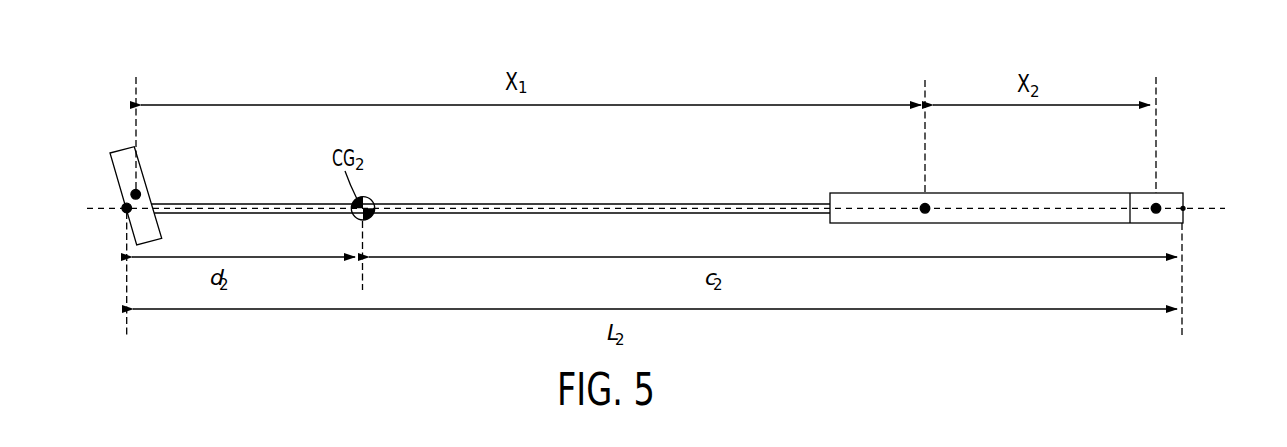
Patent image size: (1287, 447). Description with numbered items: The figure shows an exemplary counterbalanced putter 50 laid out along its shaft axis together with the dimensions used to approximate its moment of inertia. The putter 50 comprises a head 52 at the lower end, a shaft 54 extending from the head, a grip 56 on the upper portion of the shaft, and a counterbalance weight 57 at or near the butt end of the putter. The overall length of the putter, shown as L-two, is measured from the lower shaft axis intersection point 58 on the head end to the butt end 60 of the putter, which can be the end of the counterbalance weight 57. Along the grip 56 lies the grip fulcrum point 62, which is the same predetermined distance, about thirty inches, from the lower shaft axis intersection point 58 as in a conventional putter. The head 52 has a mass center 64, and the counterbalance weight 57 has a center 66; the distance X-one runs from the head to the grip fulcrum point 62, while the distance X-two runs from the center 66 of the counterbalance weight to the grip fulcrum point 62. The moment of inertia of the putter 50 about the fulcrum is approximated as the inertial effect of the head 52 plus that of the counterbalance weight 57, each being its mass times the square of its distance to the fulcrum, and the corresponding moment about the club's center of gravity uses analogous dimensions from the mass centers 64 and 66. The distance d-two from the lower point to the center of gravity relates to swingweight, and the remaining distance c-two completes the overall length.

The counterbalanced putter 50 is at (287, 64).
The head 52 is at (131, 147).
The shaft 54 is at (500, 204).
The grip 56 is at (1032, 193).
The counterbalance weight 57 is at (1141, 193).
The lower shaft axis intersection point 58 is at (122, 206).
The butt end 60 is at (1186, 207).
The grip fulcrum point 62 is at (922, 204).
The mass center of the head 64 is at (141, 192).
The center of the counterbalance weight 66 is at (1159, 204).